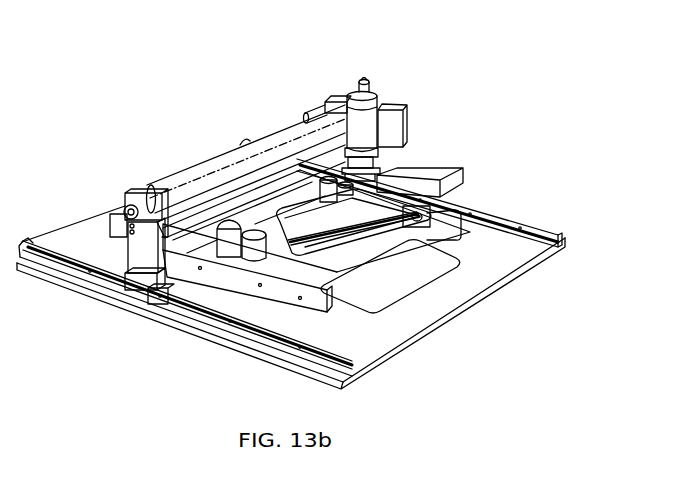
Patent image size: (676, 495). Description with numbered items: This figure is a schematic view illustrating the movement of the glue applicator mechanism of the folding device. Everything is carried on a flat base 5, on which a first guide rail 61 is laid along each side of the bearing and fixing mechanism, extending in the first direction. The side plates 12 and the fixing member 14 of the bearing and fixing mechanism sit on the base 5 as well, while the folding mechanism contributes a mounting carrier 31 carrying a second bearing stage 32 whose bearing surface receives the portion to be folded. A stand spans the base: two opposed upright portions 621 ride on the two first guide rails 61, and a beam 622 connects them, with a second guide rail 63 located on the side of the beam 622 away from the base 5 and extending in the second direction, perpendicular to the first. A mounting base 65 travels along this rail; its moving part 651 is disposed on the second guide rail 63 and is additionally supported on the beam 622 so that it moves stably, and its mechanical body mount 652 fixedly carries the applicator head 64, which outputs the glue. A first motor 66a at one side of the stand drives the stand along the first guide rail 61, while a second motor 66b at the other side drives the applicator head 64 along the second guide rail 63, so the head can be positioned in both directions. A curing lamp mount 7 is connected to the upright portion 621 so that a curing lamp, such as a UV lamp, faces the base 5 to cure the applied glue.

The base 5 is at (498, 263).
The side plates 12 is at (250, 278).
The fixing member 14 is at (235, 247).
The mounting carrier 31 is at (377, 187).
The second bearing stage 32 is at (368, 227).
The first guide rail 61 is at (473, 210).
The upright portions 621 is at (132, 233).
The beam 622 is at (315, 138).
The second guide rail 63 is at (235, 158).
The applicator head 64 is at (368, 112).
The mounting base 65 is at (318, 57).
The moving part 651 is at (328, 107).
The mechanical body mount 652 is at (340, 92).
The first motor 66a is at (398, 127).
The second motor 66b is at (145, 203).
The curing lamp mount 7 is at (118, 220).